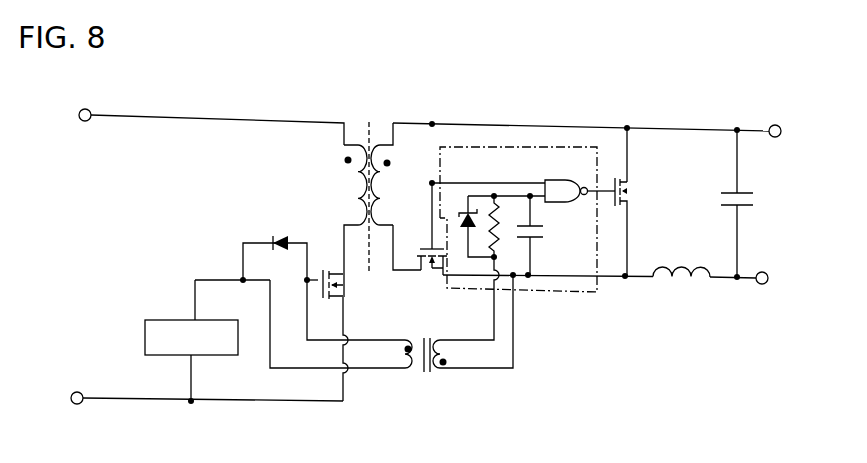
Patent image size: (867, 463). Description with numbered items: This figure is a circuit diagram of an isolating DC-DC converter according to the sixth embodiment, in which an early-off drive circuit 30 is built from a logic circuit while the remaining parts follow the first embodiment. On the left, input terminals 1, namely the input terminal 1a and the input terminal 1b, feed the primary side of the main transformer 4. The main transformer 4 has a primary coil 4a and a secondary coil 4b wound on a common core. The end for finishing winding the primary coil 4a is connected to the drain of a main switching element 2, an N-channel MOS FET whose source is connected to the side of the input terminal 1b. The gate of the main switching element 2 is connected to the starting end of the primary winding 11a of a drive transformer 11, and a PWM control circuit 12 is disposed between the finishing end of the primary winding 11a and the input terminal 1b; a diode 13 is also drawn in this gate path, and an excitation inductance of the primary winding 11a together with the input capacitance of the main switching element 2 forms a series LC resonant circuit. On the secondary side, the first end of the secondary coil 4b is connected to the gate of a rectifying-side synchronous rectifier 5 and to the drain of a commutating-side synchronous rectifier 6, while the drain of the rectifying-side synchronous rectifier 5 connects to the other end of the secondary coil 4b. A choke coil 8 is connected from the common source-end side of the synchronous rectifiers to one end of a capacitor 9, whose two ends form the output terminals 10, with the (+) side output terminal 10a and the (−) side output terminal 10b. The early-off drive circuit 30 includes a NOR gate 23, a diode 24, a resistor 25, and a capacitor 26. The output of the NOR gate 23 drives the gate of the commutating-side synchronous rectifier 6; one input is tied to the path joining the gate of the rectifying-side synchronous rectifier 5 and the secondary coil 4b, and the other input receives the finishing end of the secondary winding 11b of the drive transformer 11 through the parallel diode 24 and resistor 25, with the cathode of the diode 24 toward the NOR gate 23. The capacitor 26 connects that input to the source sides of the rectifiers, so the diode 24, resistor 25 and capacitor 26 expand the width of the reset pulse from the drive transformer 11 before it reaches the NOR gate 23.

The input terminals 1 is at (80, 256).
The input terminal 1a is at (84, 129).
The input terminal 1b is at (77, 385).
The main switching element 2 is at (333, 284).
The main transformer 4 is at (367, 194).
The primary coil 4a is at (347, 221).
The secondary coil 4b is at (388, 174).
The rectifying-side synchronous rectifier 5 is at (432, 239).
The commutating-side synchronous rectifier 6 is at (629, 202).
The choke coil 8 is at (681, 261).
The capacitor 9 is at (735, 203).
The output terminals 10 is at (780, 206).
The (+) side output terminal 10a is at (783, 119).
The (−) side output terminal 10b is at (777, 291).
The drive transformer 11 is at (423, 367).
The primary winding 11a is at (387, 354).
The secondary winding 11b is at (458, 354).
The PWM control circuit 12 is at (168, 320).
The diode 13 is at (273, 236).
The NOR gate 23 is at (580, 179).
The diode 24 is at (468, 222).
The resistor 25 is at (494, 196).
The capacitor 26 is at (539, 235).
The early-off drive circuit 30 is at (537, 292).